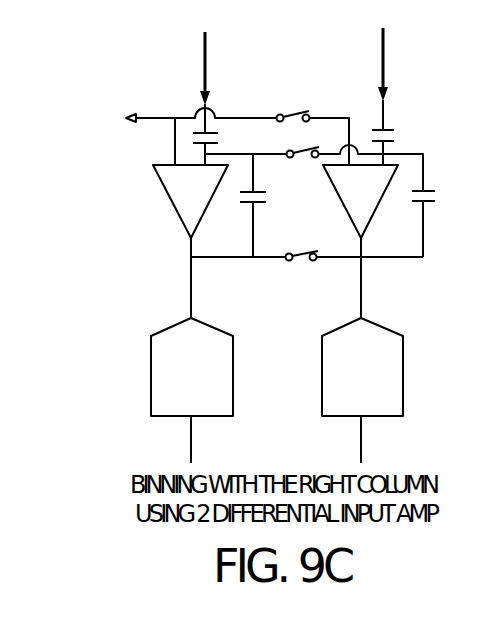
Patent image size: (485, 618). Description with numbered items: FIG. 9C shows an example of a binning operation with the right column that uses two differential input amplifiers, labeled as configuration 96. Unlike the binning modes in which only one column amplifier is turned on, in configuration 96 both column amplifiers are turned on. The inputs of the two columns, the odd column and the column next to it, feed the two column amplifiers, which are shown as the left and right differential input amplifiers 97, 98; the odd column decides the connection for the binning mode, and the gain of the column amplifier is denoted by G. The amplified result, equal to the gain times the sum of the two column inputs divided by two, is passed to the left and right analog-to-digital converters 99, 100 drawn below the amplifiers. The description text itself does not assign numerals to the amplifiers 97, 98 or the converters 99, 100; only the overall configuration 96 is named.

The configuration 96 is at (96, 198).
The left differential input amplifier AMP (label not shown on sheet) 97 is at (190, 201).
The right differential input amplifier AMP (label not shown on sheet) 98 is at (360, 201).
The left ADC (label not shown on sheet) 99 is at (192, 367).
The right ADC (label not shown on sheet) 100 is at (362, 367).